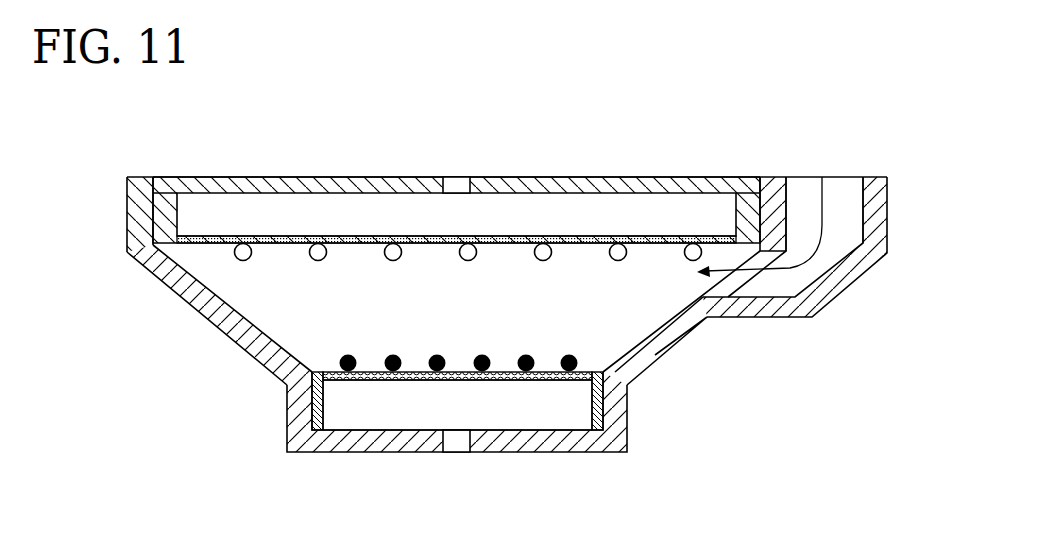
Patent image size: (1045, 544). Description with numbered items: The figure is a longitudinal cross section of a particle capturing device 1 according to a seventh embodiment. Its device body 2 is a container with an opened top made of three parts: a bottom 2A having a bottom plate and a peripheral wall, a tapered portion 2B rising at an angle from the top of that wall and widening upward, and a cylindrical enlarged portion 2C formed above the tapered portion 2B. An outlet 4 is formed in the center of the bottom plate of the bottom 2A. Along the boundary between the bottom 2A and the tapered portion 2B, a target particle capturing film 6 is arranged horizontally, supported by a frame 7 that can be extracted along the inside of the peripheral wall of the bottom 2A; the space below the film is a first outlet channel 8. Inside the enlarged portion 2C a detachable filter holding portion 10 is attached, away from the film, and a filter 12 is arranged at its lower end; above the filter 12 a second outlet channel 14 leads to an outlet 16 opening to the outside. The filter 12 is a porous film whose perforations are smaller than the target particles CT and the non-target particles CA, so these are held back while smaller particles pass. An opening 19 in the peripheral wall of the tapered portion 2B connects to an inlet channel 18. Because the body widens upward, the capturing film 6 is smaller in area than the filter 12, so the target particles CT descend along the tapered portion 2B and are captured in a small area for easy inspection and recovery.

The particle capturing device 1 is at (496, 310).
The device body 2 is at (496, 349).
The bottom 2A is at (500, 447).
The tapered portion 2B is at (200, 315).
The enlarged portion 2C is at (127, 200).
The outlet 4 is at (458, 453).
The target particle capturing film 6 is at (425, 376).
The frame 7 is at (325, 404).
The first outlet channel 8 is at (535, 405).
The filter holding portion 10 is at (226, 178).
The filter 12 is at (640, 236).
The second outlet channel 14 is at (456, 172).
The outlet 16 is at (461, 178).
The inlet channel 18 is at (787, 194).
The opening 19 is at (740, 283).
The non-target particles CA is at (243, 262).
The target particles CT is at (393, 354).